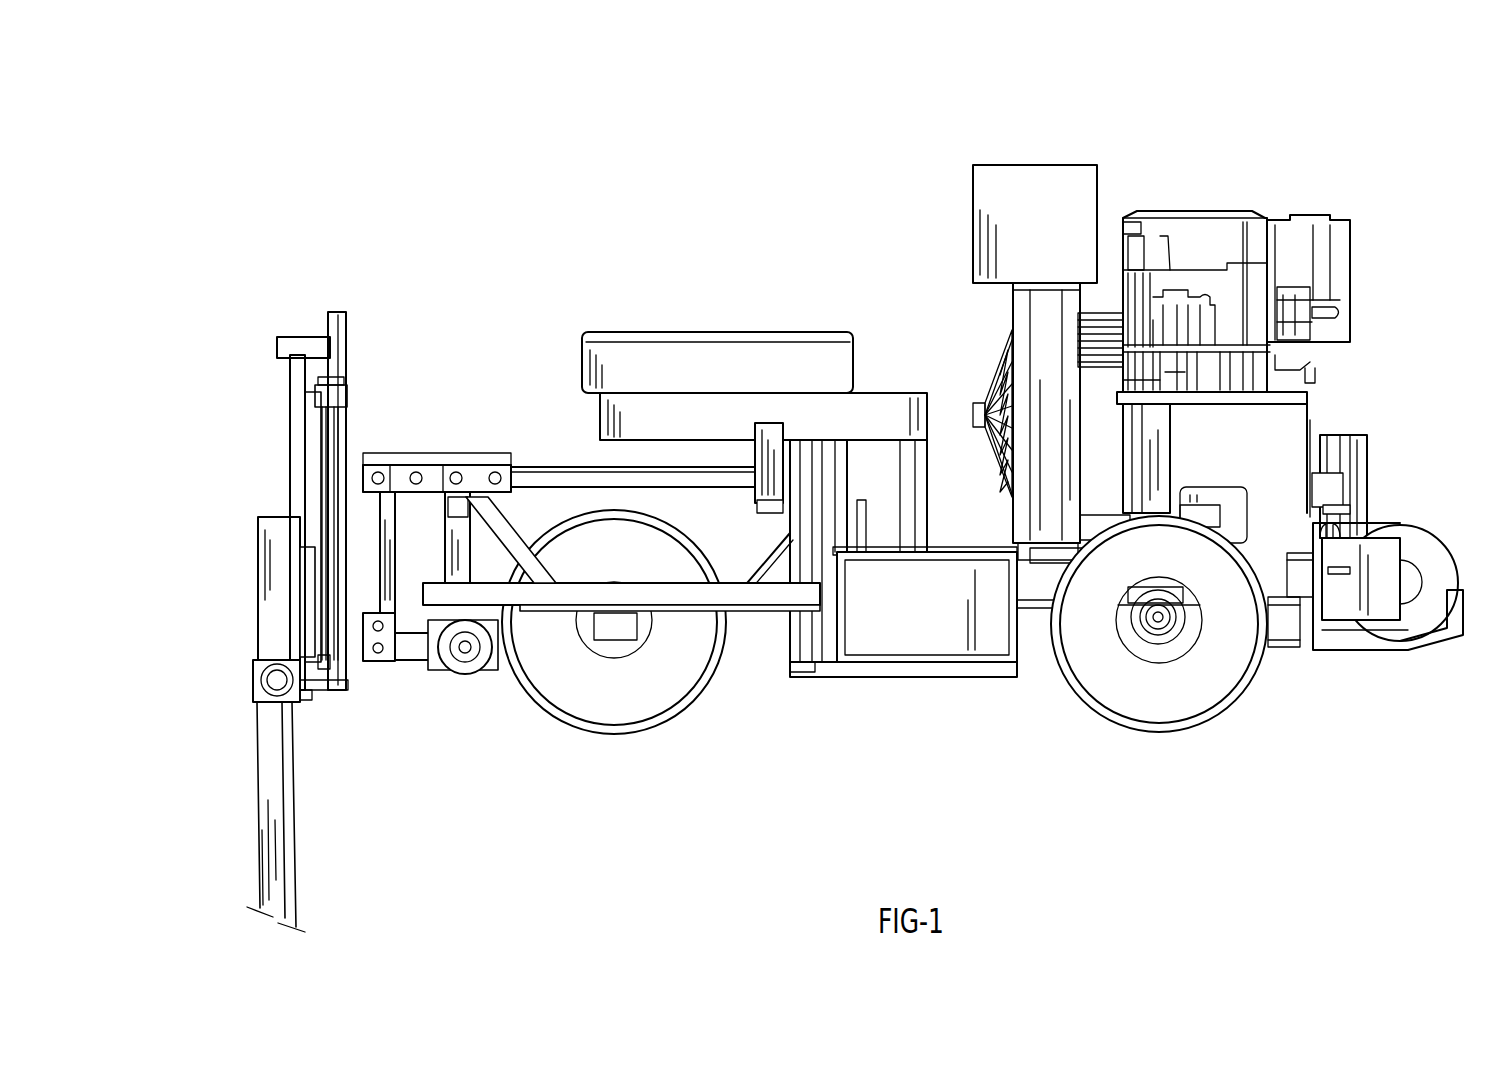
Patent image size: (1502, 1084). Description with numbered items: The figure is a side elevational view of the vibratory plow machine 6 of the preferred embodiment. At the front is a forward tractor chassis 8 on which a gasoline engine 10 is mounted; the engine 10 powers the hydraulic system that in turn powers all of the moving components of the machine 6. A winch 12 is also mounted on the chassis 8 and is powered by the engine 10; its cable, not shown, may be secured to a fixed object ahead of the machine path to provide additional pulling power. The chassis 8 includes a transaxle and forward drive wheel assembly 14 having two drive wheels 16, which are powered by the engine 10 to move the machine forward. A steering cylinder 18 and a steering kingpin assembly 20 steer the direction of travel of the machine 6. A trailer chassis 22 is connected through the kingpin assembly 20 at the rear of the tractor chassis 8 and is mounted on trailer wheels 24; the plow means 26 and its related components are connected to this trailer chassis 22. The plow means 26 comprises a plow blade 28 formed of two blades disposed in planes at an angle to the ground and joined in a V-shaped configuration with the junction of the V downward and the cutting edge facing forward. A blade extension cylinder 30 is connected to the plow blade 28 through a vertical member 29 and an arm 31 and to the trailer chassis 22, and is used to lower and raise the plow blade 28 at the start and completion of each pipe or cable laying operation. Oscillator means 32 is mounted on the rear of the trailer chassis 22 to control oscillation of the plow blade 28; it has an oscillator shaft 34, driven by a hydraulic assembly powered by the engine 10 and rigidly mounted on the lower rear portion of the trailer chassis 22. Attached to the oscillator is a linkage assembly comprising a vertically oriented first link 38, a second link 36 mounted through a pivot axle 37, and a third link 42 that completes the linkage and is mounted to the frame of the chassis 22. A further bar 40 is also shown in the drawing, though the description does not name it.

The vibratory plow machine 6 is at (772, 253).
The forward tractor chassis 8 is at (1239, 169).
The gasoline engine 10 is at (1352, 247).
The winch 12 is at (1432, 537).
The transaxle and forward drive wheel assembly 14 is at (1038, 713).
The drive wheels 16 is at (1226, 680).
The steering cylinder 18 is at (757, 496).
The steering kingpin assembly 20 is at (787, 663).
The trailer chassis 22 is at (733, 691).
The trailer wheels 24 is at (543, 752).
The plow means 26 is at (244, 501).
The plow blade 28 is at (255, 673).
The vertical member 29 is at (333, 312).
The blade extension cylinder 30 is at (315, 440).
The arm 31 is at (292, 380).
The oscillator means 32 is at (507, 427).
The oscillator shaft 34 is at (462, 658).
The second link 36 is at (410, 652).
The pivot axle 37 is at (470, 674).
The first link 38 is at (396, 550).
The cross bar 40 is at (513, 478).
The third link 42 is at (428, 470).